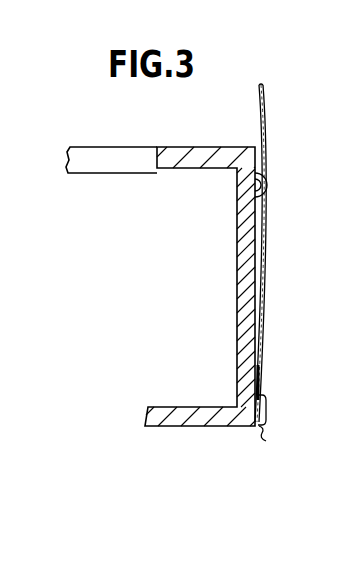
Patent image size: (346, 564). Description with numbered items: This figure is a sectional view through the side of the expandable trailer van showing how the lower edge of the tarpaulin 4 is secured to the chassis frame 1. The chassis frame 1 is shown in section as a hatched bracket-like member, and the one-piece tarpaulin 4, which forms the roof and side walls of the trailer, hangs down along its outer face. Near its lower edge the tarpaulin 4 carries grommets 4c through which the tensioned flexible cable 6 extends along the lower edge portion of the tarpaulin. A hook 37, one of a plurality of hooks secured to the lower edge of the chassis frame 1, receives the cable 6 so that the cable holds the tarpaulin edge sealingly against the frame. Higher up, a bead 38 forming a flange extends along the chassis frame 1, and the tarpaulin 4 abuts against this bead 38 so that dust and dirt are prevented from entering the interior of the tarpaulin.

The chassis frame 1 is at (237, 273).
The tarpaulin 4 is at (267, 143).
The grommets 4c is at (262, 378).
The flexible cable 6 is at (265, 403).
The hooks 37 is at (266, 430).
The bead 38 is at (267, 183).